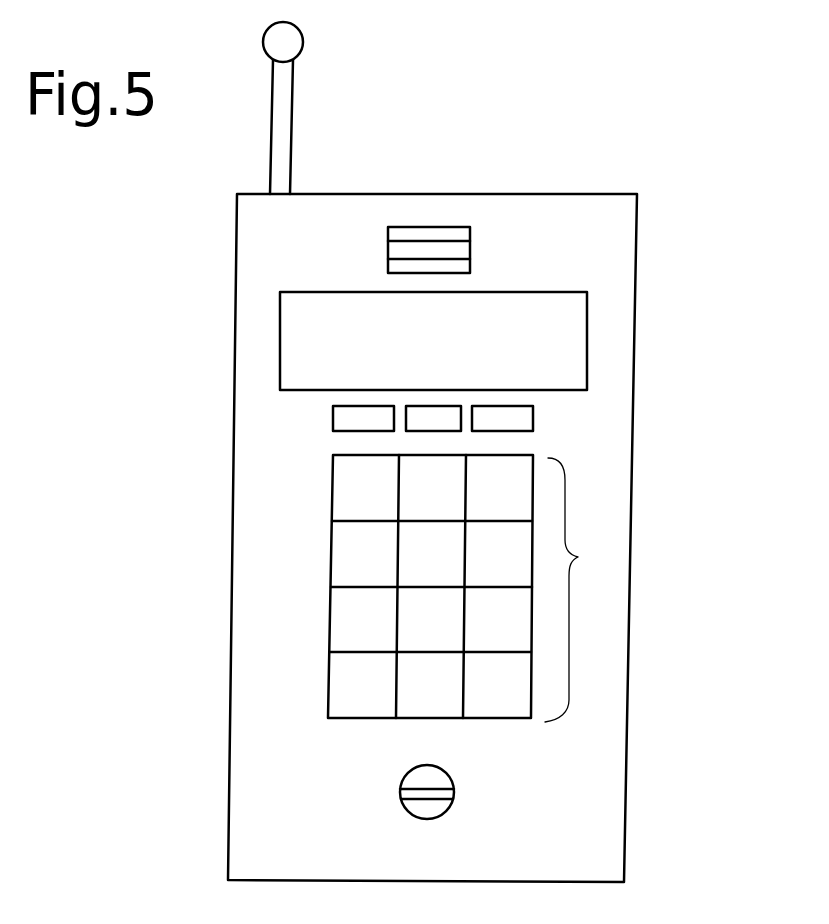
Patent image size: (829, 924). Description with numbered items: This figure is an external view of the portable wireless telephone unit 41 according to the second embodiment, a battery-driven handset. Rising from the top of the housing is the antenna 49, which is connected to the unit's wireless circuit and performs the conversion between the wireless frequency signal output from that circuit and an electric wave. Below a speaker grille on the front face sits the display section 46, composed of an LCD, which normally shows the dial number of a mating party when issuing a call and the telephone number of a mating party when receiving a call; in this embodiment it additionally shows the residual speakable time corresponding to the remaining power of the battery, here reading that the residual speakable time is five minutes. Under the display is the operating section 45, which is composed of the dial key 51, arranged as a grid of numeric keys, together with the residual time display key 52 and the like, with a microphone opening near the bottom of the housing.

The portable wireless telephone unit 41 is at (563, 210).
The operating section 45 is at (277, 663).
The display section 46 is at (587, 318).
The antenna 49 is at (277, 108).
The dial key 51 is at (578, 557).
The residual time display key 52 is at (520, 417).